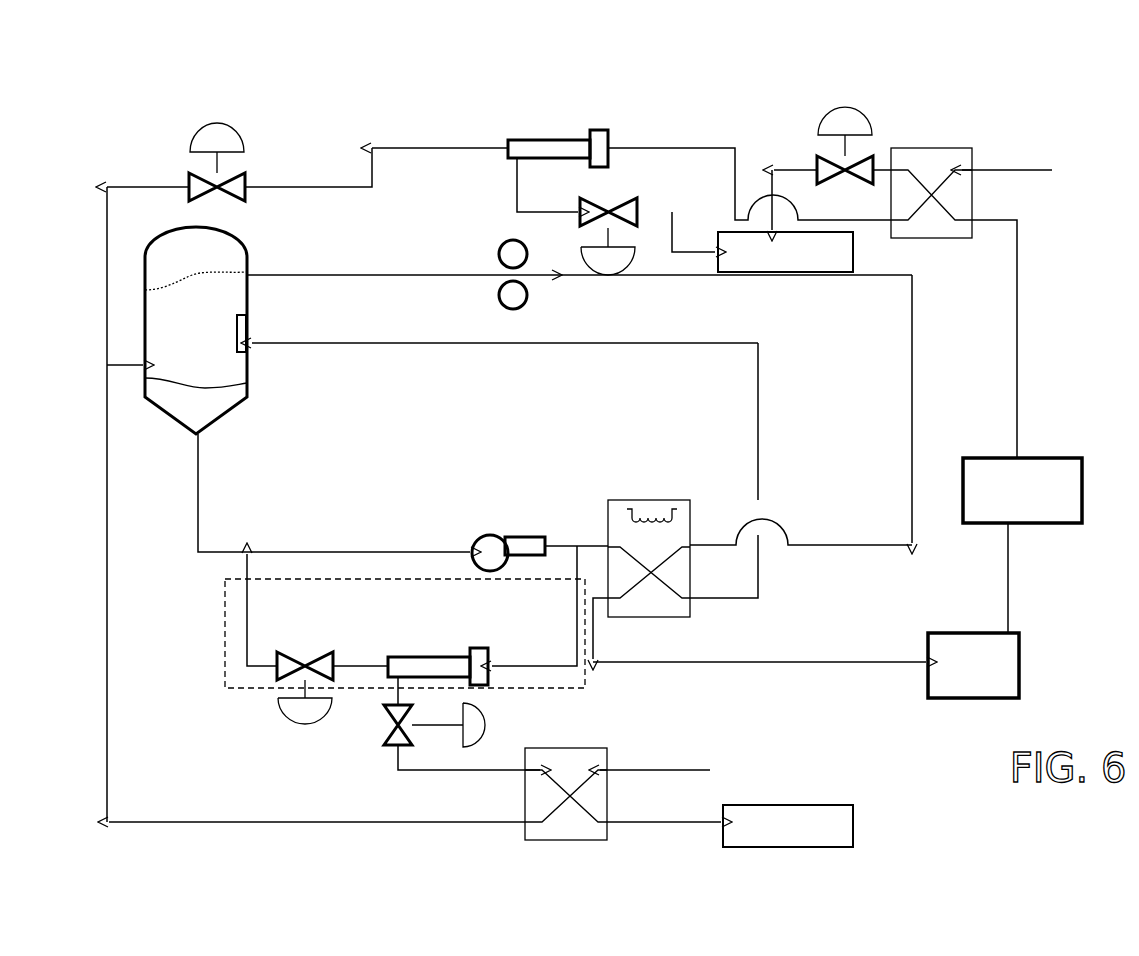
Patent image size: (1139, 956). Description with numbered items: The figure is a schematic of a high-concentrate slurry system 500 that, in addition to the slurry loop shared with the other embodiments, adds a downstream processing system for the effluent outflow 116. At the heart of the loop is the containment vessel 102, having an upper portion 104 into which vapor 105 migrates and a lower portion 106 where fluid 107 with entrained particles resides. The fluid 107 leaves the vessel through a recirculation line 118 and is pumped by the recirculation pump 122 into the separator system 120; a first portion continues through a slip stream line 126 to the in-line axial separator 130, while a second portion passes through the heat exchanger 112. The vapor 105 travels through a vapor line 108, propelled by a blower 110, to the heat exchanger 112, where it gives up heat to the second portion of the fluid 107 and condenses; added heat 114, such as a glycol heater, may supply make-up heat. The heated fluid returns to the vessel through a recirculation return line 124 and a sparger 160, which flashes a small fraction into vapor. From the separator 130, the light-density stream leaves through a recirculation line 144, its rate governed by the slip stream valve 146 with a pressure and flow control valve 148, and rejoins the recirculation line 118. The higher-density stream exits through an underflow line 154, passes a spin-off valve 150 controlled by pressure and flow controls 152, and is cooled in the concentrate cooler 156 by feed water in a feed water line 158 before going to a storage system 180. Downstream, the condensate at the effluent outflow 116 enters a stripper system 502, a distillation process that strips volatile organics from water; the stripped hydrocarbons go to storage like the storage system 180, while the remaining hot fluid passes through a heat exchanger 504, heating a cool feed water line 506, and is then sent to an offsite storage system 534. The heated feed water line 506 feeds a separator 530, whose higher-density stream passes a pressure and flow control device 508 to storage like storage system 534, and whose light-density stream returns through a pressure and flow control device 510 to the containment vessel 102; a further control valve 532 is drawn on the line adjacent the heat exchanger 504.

The containment vessel 102 is at (170, 243).
The upper portion 104 is at (249, 258).
The vapor 105 is at (237, 232).
The lower portion 106 is at (232, 373).
The fluid 107 is at (165, 413).
The vapor line 108 is at (480, 274).
The blower 110 is at (527, 293).
The heat exchanger 112 is at (608, 500).
The added heat 114 is at (657, 512).
The effluent outflow 116 is at (973, 698).
The recirculation line 118 is at (198, 495).
The separator system 120 is at (225, 673).
The recirculation pump 122 is at (490, 535).
The recirculation return line 124 is at (758, 430).
The slip stream line 126 is at (577, 600).
The in-line axial separator 130 is at (440, 657).
The recirculation line 144 is at (362, 663).
The slip stream valve 146 is at (320, 655).
The pressure and flow control valve 148 is at (307, 723).
The spin-off valve 150 is at (390, 740).
The pressure and flow controls 152 is at (483, 722).
The underflow line 154 is at (652, 818).
The concentrate cooler 156 is at (580, 747).
The feed water line 158 is at (643, 768).
The sparger 160 is at (250, 333).
The storage system 180 is at (790, 803).
The high-concentrate slurry system 500 is at (920, 798).
The stripper system 502 is at (1062, 457).
The heat exchanger 504 is at (973, 203).
The feed water line 506 is at (1010, 172).
The pressure and flow control device 508 is at (640, 198).
The pressure and flow control device 510 is at (246, 141).
The separator 530 is at (508, 160).
The valve 532 is at (817, 155).
The storage system 534 is at (825, 265).